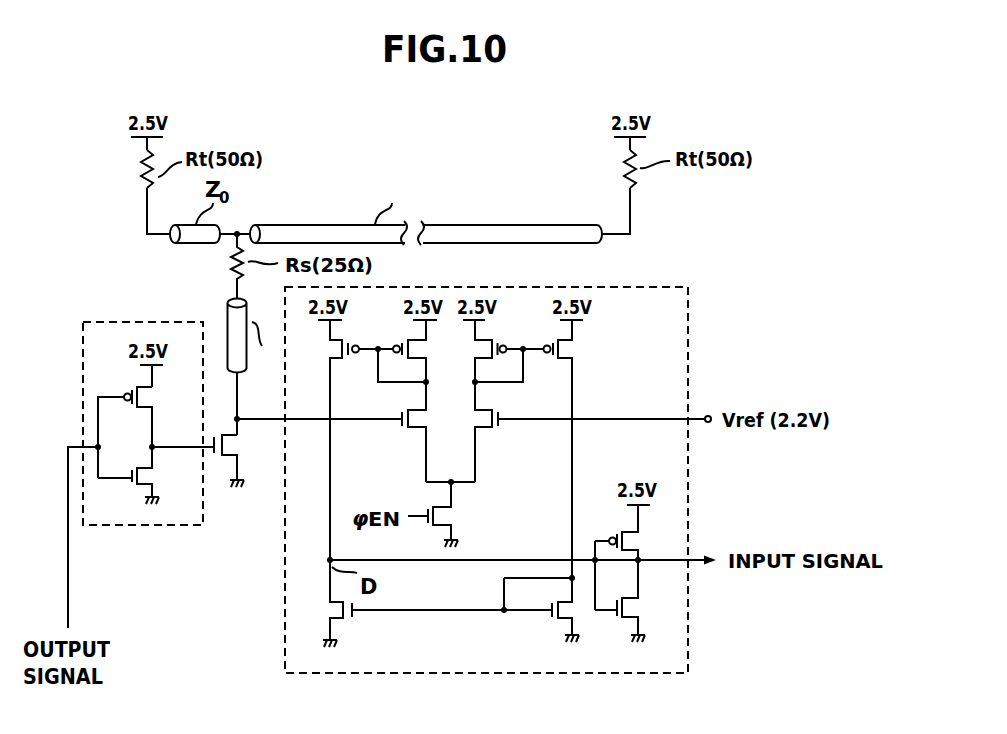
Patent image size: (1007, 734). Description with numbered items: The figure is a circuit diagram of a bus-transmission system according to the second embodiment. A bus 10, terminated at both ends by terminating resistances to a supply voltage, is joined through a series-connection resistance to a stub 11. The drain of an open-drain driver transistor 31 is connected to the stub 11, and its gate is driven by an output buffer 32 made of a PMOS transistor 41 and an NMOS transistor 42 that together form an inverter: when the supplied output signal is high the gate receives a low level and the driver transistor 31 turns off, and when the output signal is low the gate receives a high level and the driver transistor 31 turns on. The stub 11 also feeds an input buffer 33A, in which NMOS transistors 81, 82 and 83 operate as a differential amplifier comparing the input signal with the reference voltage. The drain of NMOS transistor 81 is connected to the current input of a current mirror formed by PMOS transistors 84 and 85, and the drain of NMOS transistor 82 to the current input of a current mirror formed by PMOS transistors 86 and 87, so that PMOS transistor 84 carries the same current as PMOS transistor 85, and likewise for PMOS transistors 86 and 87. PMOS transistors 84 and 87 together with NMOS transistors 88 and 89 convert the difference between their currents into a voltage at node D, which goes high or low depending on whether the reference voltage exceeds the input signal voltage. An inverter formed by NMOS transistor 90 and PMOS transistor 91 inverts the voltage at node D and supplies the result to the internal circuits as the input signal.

The bus 10 is at (283, 224).
The stub 11 is at (226, 318).
The driver transistor 31 is at (213, 457).
The output buffer 32 is at (107, 527).
The input buffer 33A is at (595, 283).
The PMOS transistor 41 is at (155, 397).
The NMOS transistor 42 is at (155, 477).
The NMOS transistor 81 is at (422, 419).
The NMOS transistor 82 is at (493, 433).
The NMOS transistor 83 is at (458, 516).
The PMOS transistor 84 is at (328, 346).
The PMOS transistor 85 is at (422, 352).
The PMOS transistor 86 is at (497, 333).
The PMOS transistor 87 is at (573, 349).
The NMOS transistor 88 is at (347, 622).
The NMOS transistor 89 is at (575, 612).
The NMOS transistor 90 is at (640, 607).
The PMOS transistor 91 is at (642, 542).